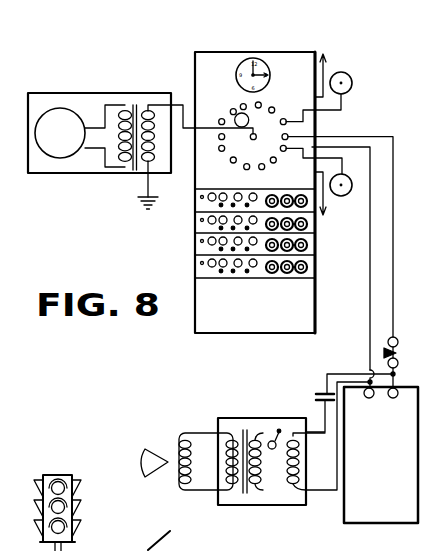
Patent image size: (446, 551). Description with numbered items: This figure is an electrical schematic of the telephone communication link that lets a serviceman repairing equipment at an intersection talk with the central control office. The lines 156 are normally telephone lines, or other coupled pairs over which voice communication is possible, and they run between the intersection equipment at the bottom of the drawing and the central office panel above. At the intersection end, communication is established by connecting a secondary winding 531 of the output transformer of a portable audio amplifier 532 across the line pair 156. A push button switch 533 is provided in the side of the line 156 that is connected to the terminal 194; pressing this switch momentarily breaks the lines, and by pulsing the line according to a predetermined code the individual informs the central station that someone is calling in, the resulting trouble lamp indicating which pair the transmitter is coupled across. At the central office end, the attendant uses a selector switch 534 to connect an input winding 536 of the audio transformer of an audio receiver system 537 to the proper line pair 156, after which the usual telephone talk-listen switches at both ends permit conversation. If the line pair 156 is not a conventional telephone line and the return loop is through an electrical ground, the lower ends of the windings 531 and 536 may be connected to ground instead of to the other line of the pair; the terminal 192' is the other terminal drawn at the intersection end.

The audio receiver system 537 is at (113, 82).
The input winding 536 is at (154, 112).
The selector switch 534 is at (272, 122).
The terminal 194 is at (351, 90).
The lines 156 is at (372, 246).
The push button switch 533 is at (414, 356).
The terminal 192' is at (364, 404).
The portable audio amplifier 532 is at (251, 516).
The secondary winding 531 is at (310, 497).